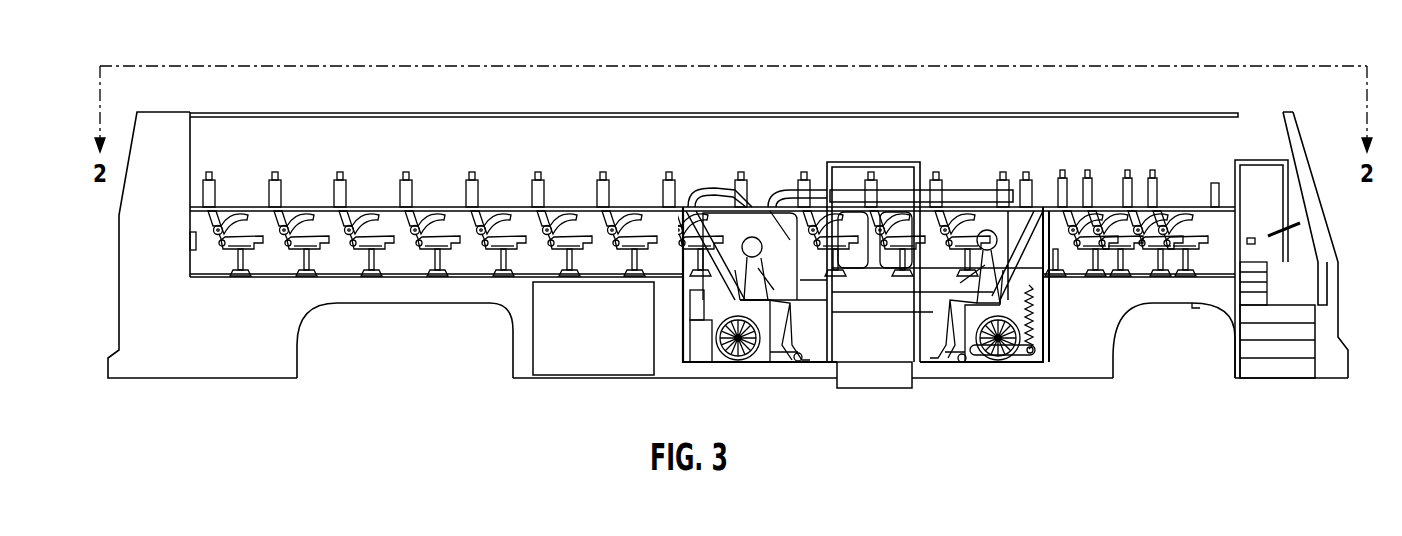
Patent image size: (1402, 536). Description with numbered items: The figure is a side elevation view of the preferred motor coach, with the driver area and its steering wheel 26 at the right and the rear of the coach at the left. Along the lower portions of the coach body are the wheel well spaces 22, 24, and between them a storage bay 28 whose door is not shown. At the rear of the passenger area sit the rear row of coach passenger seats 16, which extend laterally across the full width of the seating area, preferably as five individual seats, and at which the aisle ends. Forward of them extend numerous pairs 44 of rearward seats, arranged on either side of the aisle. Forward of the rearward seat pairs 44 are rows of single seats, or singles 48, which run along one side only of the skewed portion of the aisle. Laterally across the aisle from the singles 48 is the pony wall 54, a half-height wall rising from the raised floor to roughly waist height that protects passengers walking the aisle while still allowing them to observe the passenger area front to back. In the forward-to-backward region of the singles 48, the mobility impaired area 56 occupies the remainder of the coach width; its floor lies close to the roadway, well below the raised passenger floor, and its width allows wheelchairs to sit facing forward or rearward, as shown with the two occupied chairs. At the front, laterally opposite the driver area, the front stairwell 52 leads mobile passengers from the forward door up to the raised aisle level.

The rear row of coach passenger seats 16 is at (214, 188).
The pairs of rearward seats 44 is at (278, 182).
The singles 48 is at (738, 180).
The wall 54 is at (972, 198).
The steering wheel 26 is at (1283, 225).
The wheel well space 22 is at (403, 346).
The wheel well space 24 is at (1170, 348).
The storage bay 28 is at (591, 352).
The front stairwell 52 is at (1275, 350).
The mobility impaired area 56 is at (800, 364).